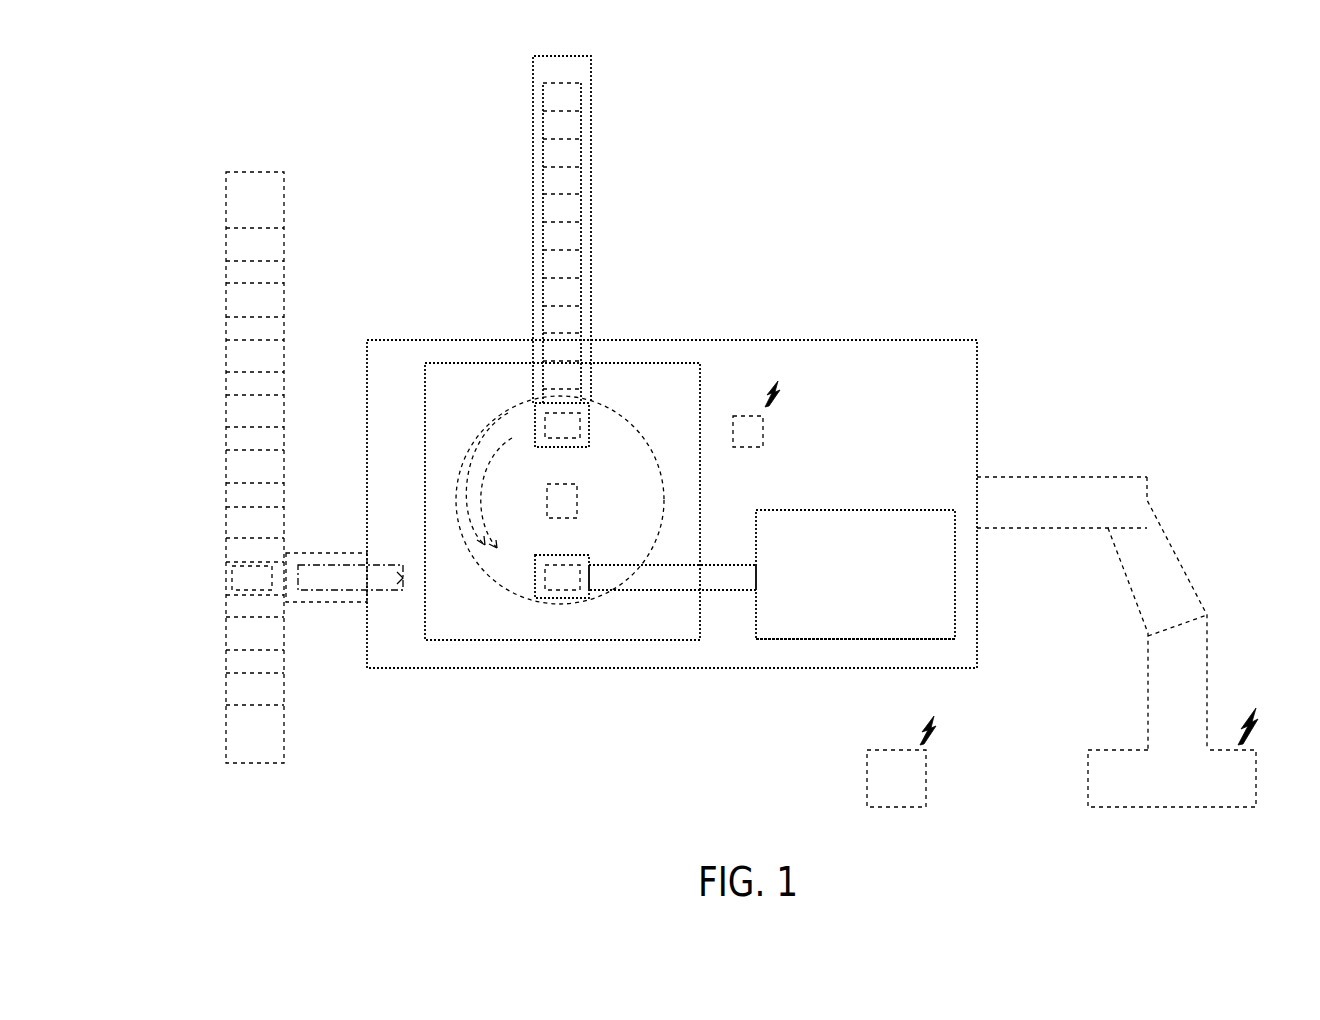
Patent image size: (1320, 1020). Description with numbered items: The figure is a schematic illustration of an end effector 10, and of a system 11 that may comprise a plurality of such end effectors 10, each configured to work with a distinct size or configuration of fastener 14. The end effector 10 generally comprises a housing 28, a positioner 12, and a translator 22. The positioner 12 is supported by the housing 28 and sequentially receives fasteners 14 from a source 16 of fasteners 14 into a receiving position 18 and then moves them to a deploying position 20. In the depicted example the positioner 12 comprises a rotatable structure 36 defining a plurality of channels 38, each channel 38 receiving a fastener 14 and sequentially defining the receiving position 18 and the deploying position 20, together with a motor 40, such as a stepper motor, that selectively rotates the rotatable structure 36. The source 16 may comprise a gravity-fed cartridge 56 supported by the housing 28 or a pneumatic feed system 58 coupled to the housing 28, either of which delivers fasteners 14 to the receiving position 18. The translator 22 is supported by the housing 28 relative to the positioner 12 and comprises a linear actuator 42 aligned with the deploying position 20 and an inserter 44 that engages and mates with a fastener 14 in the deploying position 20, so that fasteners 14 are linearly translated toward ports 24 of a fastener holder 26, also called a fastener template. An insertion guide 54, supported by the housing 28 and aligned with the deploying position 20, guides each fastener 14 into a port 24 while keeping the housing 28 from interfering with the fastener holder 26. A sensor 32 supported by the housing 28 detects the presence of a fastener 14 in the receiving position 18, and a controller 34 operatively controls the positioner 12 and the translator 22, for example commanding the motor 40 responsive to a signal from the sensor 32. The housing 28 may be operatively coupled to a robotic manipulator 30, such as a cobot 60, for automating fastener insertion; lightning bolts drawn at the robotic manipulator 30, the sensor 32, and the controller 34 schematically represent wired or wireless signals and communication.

The end effector 10 is at (943, 86).
The system 11 is at (930, 123).
The positioner 12 is at (703, 398).
The fastener 14 is at (232, 584).
The source of fasteners 16 is at (533, 229).
The receiving position 18 is at (590, 428).
The deploying position 20 is at (574, 555).
The translator 22 is at (845, 505).
The port 24 is at (246, 230).
The fastener holder 26 is at (255, 168).
The housing 28 is at (845, 338).
The robotic manipulator 30 is at (1058, 474).
The sensor 32 is at (765, 426).
The controller 34 is at (927, 778).
The rotatable structure 36 is at (478, 447).
The channel 38 is at (501, 480).
The motor 40 is at (580, 496).
The linear actuator 42 is at (850, 641).
The inserter 44 is at (630, 590).
The insertion guide 54 is at (326, 552).
The gravity-fed cartridge 56 is at (533, 137).
The pneumatic feed system 58 is at (541, 185).
The cobot 60 is at (1127, 475).